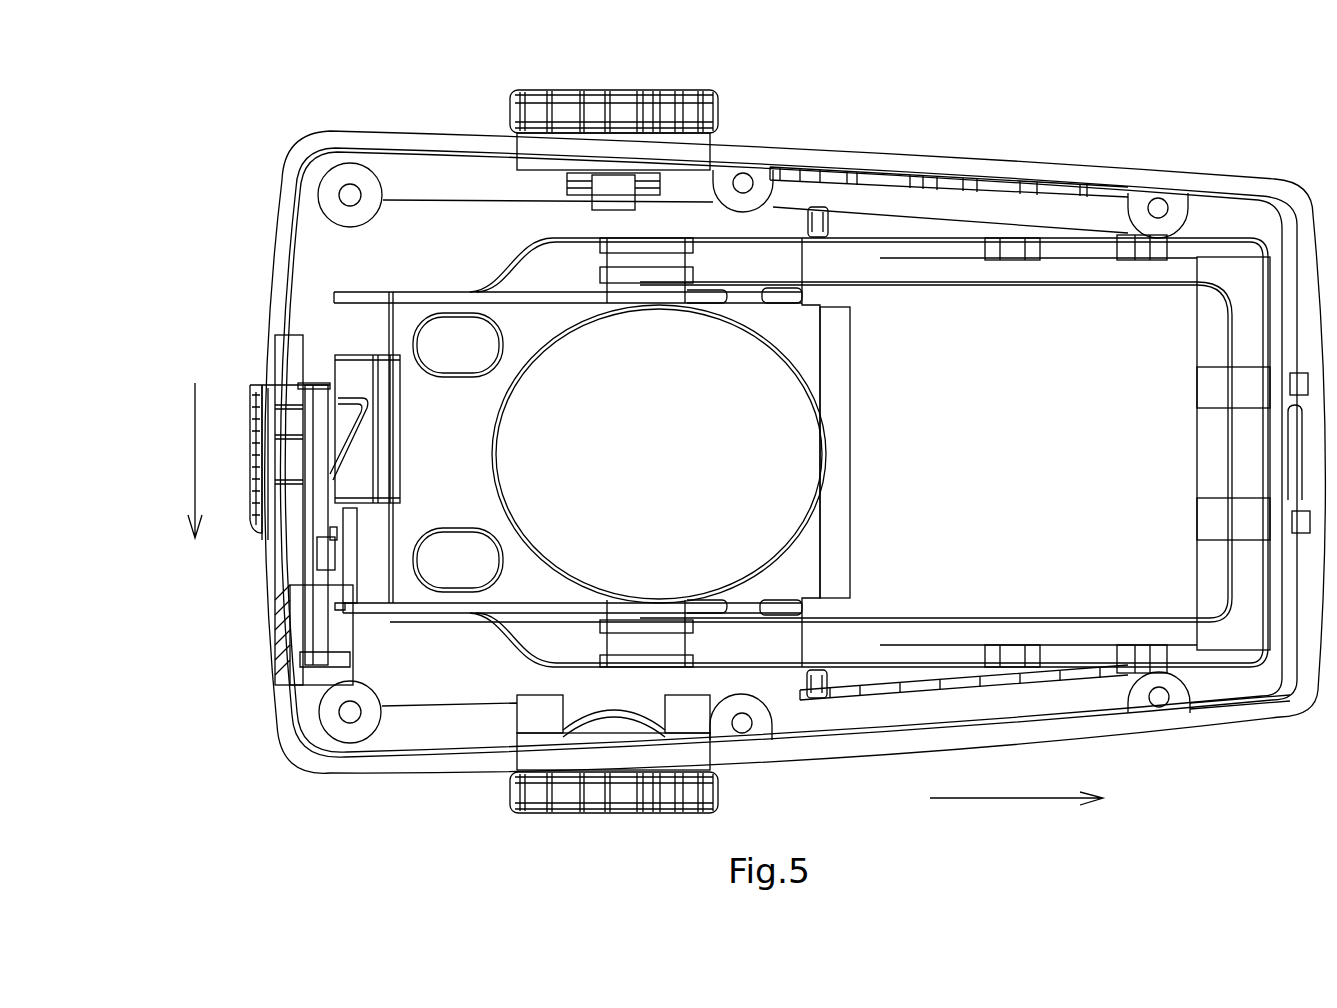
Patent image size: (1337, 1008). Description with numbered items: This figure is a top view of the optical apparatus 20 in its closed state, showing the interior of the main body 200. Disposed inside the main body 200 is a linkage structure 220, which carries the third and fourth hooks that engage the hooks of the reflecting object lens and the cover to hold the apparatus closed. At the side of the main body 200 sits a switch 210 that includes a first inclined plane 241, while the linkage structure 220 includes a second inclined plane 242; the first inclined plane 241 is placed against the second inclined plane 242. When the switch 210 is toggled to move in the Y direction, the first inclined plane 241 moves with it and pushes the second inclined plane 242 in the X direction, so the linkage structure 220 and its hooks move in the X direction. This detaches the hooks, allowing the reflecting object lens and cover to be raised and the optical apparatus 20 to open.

The optical apparatus 20 is at (152, 66).
The main body 200 is at (878, 748).
The switch 210 is at (253, 390).
The linkage structure 220 is at (442, 477).
The first inclined plane 241 is at (350, 433).
The second inclined plane 242 is at (328, 395).